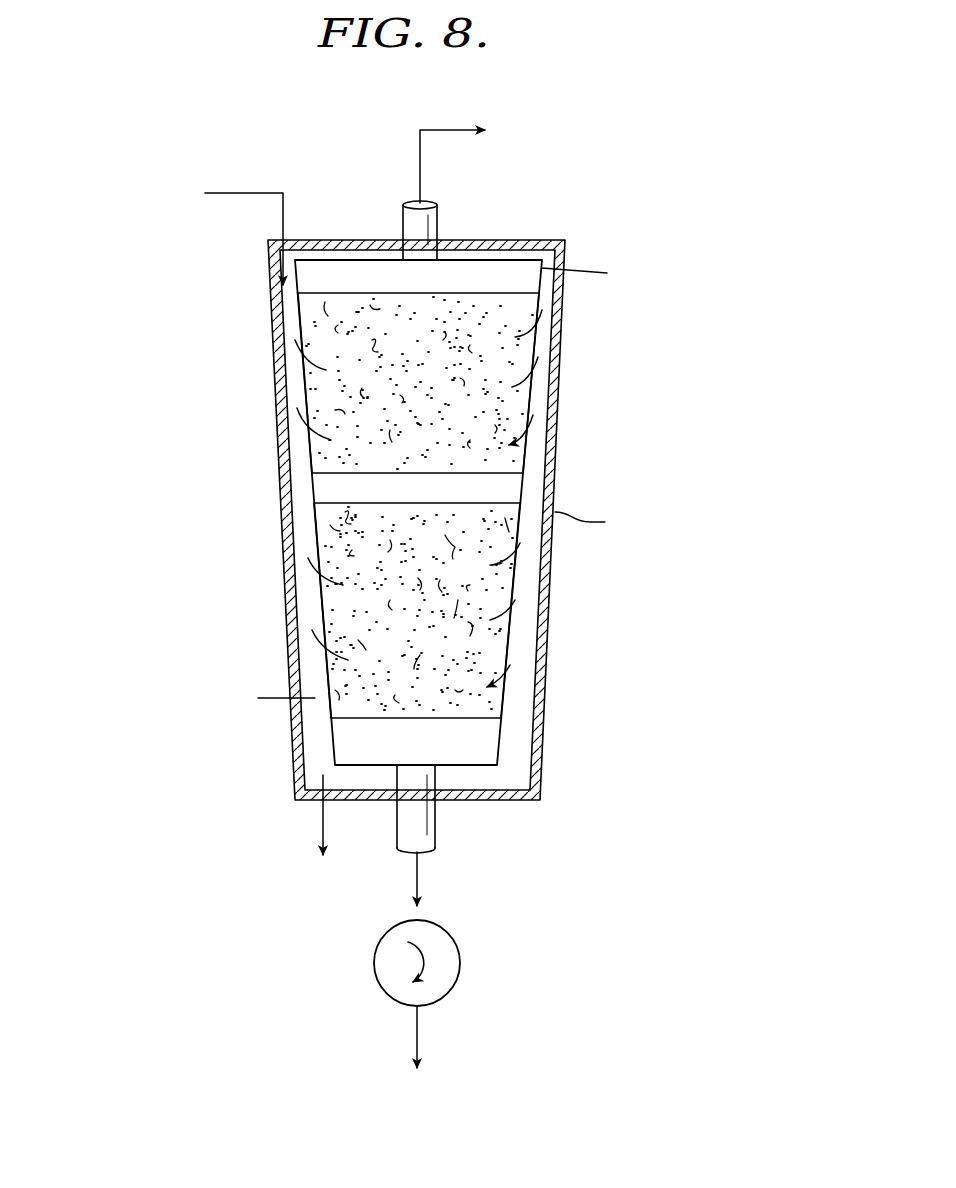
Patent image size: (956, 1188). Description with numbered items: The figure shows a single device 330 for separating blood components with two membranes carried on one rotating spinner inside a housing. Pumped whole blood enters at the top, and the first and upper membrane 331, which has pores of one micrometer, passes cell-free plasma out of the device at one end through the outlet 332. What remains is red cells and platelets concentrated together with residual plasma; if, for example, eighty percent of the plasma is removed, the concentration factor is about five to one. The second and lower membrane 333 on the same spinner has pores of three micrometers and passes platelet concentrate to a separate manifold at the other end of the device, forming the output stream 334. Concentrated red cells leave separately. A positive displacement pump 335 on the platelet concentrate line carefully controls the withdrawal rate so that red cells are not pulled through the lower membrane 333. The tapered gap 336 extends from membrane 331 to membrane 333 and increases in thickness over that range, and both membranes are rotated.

The single device 330 is at (246, 422).
The first and upper membrane 331 is at (521, 398).
The cell-free plasma outlet 332 is at (420, 183).
The second and lower membrane 333 is at (530, 623).
The output stream 334 is at (417, 865).
The positive displacement pump 335 is at (460, 971).
The tapered gap 336 is at (535, 480).